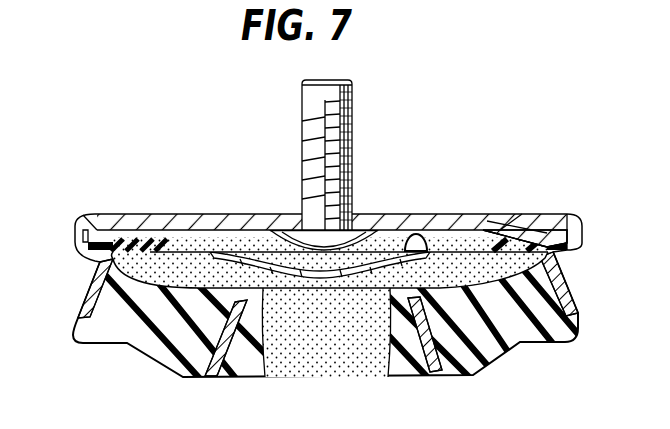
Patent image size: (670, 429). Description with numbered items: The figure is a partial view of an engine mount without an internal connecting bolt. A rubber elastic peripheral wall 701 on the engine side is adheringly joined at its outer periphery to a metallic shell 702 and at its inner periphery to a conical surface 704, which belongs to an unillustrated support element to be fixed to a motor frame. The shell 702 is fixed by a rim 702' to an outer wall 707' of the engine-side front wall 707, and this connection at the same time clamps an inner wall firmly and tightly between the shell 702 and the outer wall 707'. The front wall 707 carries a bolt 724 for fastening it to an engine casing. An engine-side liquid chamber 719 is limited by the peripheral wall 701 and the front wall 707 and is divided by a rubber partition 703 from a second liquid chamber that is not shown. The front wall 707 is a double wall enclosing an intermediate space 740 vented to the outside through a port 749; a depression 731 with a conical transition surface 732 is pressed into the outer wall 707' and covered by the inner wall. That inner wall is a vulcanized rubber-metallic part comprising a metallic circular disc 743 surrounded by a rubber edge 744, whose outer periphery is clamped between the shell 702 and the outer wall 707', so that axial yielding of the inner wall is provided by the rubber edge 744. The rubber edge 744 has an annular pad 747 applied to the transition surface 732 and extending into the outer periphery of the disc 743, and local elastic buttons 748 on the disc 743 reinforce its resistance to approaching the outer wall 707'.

The rubber elastic peripheral wall 701 is at (553, 318).
The metallic shell 702 is at (356, 285).
The rim 702' is at (595, 224).
The rubber partition 703 is at (255, 375).
The conical surface 704 is at (440, 374).
The front wall 707 is at (532, 194).
The outer wall 707' is at (536, 201).
The liquid chamber 719 is at (388, 288).
The bolt 724 is at (311, 105).
The depression 731 is at (262, 226).
The conical transition surface 732 is at (150, 240).
The intermediate space 740 is at (444, 236).
The metallic circular disc 743 is at (345, 282).
The rubber edge 744 is at (93, 263).
The annular pad 747 is at (133, 247).
The local elastic buttons 748 is at (410, 236).
The port 749 is at (198, 222).